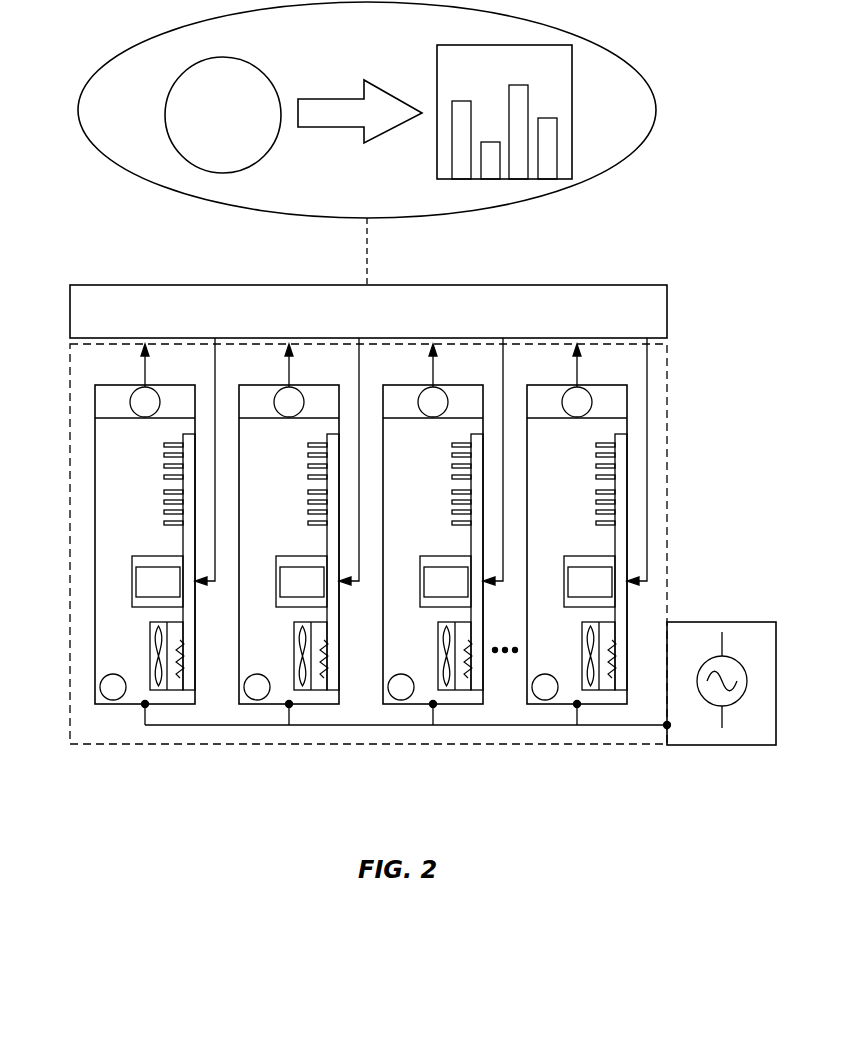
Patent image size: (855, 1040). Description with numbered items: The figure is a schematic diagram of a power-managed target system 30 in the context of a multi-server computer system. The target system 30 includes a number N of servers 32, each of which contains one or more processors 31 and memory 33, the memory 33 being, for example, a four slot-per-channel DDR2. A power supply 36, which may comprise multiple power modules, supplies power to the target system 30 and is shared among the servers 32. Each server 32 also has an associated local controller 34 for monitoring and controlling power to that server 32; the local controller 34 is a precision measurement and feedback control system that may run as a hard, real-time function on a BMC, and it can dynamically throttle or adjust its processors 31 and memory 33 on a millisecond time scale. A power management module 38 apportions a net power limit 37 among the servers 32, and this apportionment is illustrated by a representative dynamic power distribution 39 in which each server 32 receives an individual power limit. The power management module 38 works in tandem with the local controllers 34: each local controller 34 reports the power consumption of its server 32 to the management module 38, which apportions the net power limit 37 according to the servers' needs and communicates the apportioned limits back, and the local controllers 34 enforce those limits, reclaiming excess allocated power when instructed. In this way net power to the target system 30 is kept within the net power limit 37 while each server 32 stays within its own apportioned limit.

The power-managed target system 30 is at (680, 230).
The processor 31 is at (607, 695).
The server 32 is at (95, 688).
The memory 33 is at (615, 484).
The local controller 34 is at (134, 602).
The power supply 36 is at (708, 621).
The net power limit 37 is at (165, 116).
The power management module 38 is at (557, 285).
The dynamic power distribution 39 is at (572, 111).